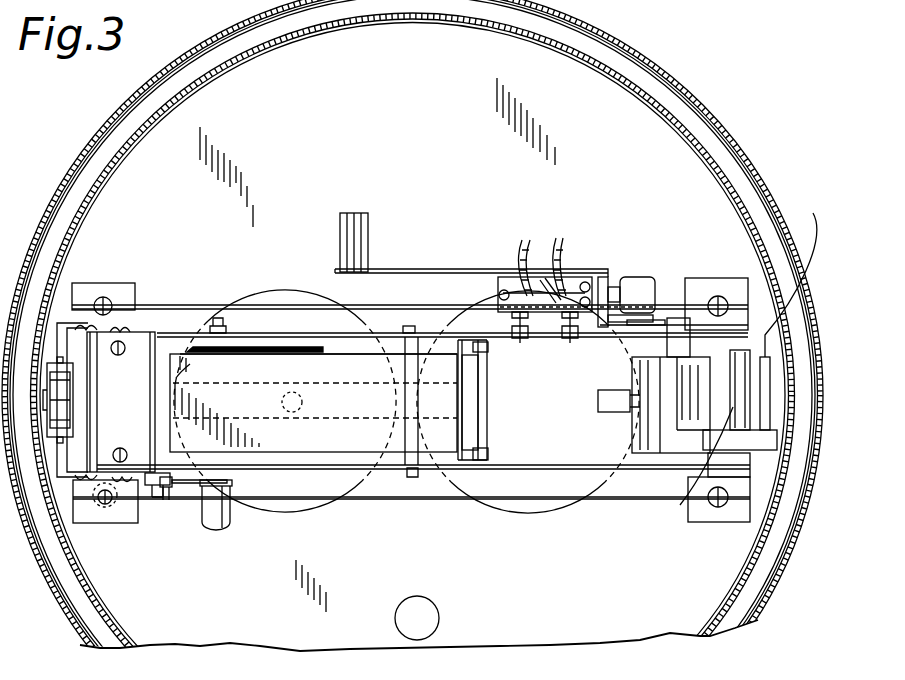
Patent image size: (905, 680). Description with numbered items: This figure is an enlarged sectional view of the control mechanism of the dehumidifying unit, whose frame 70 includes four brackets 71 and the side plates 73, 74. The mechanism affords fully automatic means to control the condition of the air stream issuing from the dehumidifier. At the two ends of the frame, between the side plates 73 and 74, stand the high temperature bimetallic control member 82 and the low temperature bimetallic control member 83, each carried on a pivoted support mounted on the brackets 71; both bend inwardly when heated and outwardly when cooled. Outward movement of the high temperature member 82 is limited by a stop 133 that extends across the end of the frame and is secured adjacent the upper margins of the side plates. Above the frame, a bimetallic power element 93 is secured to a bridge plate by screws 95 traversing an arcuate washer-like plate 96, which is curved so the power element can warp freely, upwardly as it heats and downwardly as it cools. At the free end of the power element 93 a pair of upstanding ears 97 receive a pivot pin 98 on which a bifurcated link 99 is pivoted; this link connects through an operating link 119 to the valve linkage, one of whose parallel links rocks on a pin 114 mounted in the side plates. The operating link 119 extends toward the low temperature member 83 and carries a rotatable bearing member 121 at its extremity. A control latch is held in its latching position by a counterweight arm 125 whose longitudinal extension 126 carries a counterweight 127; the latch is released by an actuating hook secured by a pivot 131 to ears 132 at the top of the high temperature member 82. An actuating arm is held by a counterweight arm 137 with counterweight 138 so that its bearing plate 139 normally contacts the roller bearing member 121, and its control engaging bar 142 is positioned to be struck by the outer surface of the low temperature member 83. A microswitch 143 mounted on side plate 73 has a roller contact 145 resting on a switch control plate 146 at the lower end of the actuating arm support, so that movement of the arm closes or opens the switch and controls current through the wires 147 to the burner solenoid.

The frame 70 is at (452, 500).
The brackets 71 is at (94, 292).
The side plate 73 is at (178, 335).
The side plate 74 is at (388, 473).
The high temperature bimetallic control member 82 is at (52, 403).
The low temperature bimetallic control member 83 is at (733, 380).
The bimetallic power element 93 is at (333, 357).
The screws 95 is at (118, 356).
The arcuate washer-like plate 96 is at (138, 330).
The upstanding ears 97 is at (455, 348).
The pivot pin 98 is at (457, 375).
The bifurcated link 99 is at (487, 372).
The pin 114 is at (408, 327).
The operating link 119 is at (623, 333).
The rotatable bearing member 121 is at (617, 404).
The counterweight arm 125 is at (163, 492).
The longitudinal extension 126 is at (190, 483).
The counterweight 127 is at (227, 523).
The pivot 131 is at (50, 417).
The ears 132 is at (62, 440).
The stop 133 is at (61, 323).
The counterweight arm 137 is at (477, 230).
The counterweight 138 is at (368, 223).
The bearing plate 139 is at (637, 433).
The control engaging bar 142 is at (791, 272).
The microswitch 143 is at (498, 287).
The roller contact 145 is at (624, 282).
The switch control plate 146 is at (640, 280).
The wires 147 is at (558, 240).